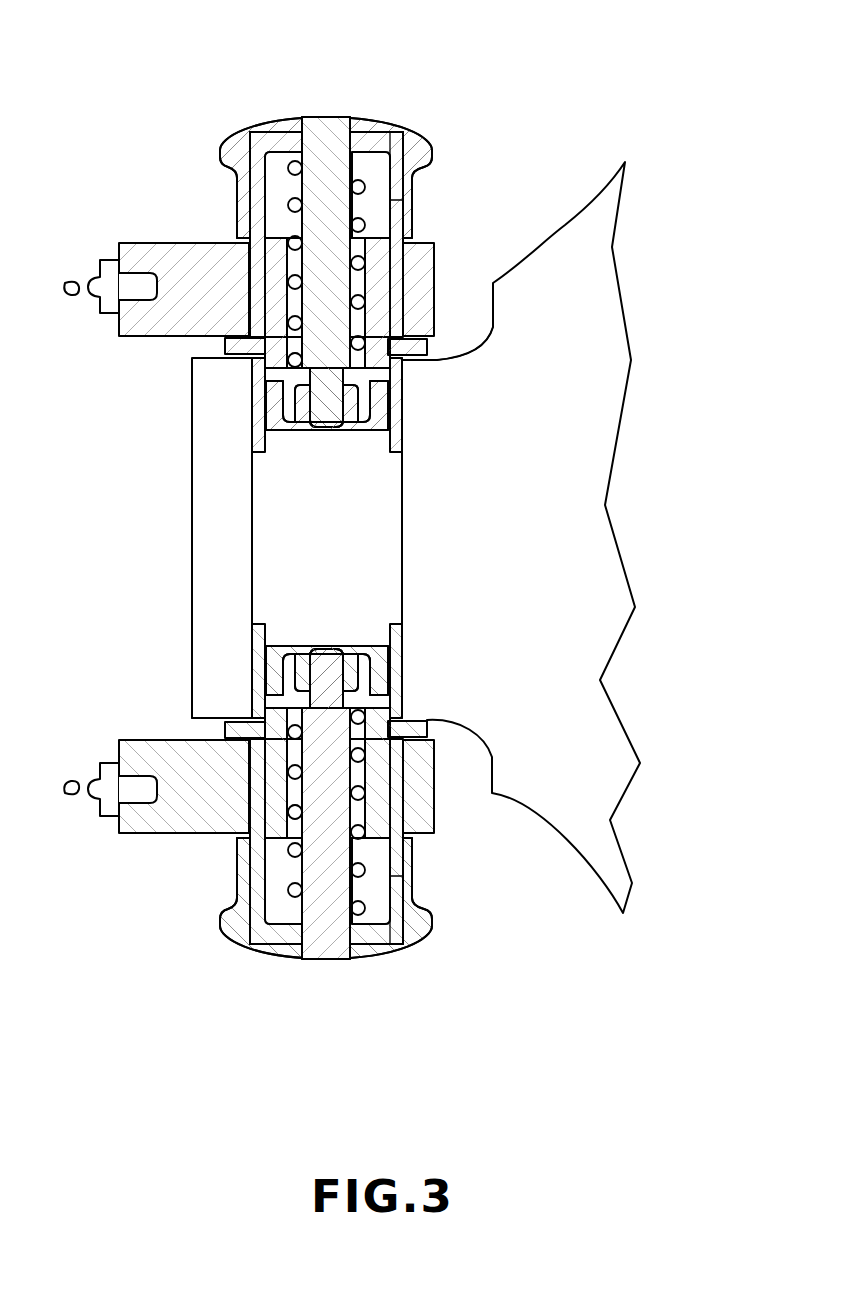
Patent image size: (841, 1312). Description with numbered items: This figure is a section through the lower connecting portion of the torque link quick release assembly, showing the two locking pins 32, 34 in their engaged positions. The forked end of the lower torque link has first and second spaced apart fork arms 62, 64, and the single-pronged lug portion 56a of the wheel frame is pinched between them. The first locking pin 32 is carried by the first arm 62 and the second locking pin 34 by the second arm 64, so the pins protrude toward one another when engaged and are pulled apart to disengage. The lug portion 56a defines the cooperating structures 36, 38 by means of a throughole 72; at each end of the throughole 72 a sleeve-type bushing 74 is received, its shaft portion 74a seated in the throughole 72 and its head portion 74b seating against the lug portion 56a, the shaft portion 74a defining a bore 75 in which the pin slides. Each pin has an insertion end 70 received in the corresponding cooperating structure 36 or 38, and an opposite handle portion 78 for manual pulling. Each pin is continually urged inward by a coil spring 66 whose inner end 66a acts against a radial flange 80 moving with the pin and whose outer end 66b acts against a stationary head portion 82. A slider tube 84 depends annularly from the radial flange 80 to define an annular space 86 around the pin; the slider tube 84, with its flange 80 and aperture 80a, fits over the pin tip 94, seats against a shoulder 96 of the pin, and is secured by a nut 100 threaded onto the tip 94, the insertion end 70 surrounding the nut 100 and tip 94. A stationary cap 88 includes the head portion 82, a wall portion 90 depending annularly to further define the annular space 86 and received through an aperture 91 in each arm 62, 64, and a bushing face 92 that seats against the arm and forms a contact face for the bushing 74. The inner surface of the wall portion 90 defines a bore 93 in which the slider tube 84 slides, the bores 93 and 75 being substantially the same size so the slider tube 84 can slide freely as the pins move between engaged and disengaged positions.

The first locking pin 32 is at (368, 122).
The second locking pin 34 is at (323, 937).
The cooperating structure 36 is at (208, 395).
The cooperating structure 38 is at (222, 695).
The lug portion 56a is at (195, 655).
The first fork arm 62 is at (415, 265).
The second fork arm 64 is at (430, 795).
The coil spring 66 is at (396, 195).
The inner end of spring 66a is at (272, 406).
The outer end of spring 66b is at (405, 172).
The insertion end 70 is at (325, 432).
The throughole 72 is at (255, 525).
The sleeve-type bushing 74 is at (402, 370).
The shaft portion 74a is at (395, 408).
The head portion 74b is at (300, 357).
The bore 75 is at (385, 452).
The handle portion 78 is at (396, 140).
The radial flange 80 is at (318, 410).
The aperture 80a is at (327, 367).
The head portion 82 is at (292, 130).
The slider tube 84 is at (298, 392).
The annular space 86 is at (247, 243).
The cap 88 is at (397, 225).
The wall portion 90 is at (253, 183).
The aperture 91 is at (390, 313).
The bushing face 92 is at (420, 343).
The bore 93 is at (337, 137).
The pin tip 94 is at (293, 377).
The shoulder 96 is at (433, 362).
The nut 100 is at (377, 398).